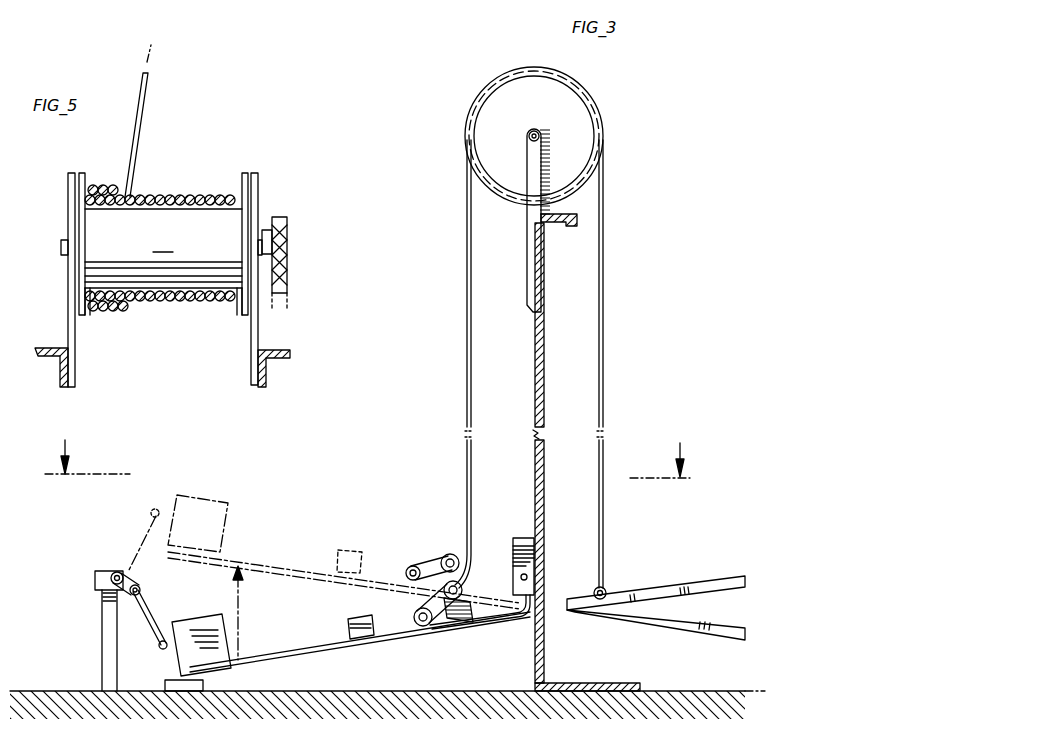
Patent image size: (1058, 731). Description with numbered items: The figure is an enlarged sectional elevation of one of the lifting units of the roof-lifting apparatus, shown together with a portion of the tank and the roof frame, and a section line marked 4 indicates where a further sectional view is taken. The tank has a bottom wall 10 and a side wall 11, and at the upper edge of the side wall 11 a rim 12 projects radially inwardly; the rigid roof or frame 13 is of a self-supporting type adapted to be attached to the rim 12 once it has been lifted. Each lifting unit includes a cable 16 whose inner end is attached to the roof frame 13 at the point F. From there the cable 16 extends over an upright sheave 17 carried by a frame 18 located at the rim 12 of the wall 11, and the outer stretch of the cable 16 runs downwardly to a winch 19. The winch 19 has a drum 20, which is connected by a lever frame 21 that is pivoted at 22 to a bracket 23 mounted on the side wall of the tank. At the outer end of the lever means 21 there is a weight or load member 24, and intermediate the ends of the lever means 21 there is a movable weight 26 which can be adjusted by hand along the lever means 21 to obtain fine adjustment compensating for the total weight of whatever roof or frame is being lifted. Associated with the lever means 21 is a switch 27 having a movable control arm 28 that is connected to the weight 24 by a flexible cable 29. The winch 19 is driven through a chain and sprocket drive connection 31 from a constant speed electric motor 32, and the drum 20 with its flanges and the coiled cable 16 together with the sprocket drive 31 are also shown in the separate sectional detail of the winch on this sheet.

In FIG. 3, the bottom wall 10 is at (622, 690).
In FIG. 3, the side wall 11 is at (545, 379).
In FIG. 3, the rim 12 is at (556, 223).
In FIG. 3, the roof frame 13 is at (714, 584).
In FIG. 3, the cable 16 is at (604, 521).
In FIG. 5, the cable 16 is at (140, 119).
In FIG. 3, the upright sheave 17 is at (542, 117).
In FIG. 3, the frame 18 is at (530, 208).
In FIG. 3, the winch 19 is at (452, 628).
In FIG. 5, the winch 19 is at (259, 186).
In FIG. 3, the drum 20 is at (476, 626).
In FIG. 5, the drum 20 is at (163, 262).
In FIG. 3, the lever frame 21 is at (281, 562).
In FIG. 5, the lever frame 21 is at (276, 350).
In FIG. 3, the pivot 22 is at (520, 577).
In FIG. 3, the bracket 23 is at (530, 538).
In FIG. 3, the load member 24 is at (194, 620).
In FIG. 3, the movable weight 26 is at (360, 615).
In FIG. 3, the switch 27 is at (97, 580).
In FIG. 3, the control arm 28 is at (141, 588).
In FIG. 3, the flexible cable 29 is at (145, 614).
In FIG. 3, the chain and sprocket drive connection 31 is at (410, 574).
In FIG. 5, the chain and sprocket drive connection 31 is at (289, 266).
In FIG. 3, the electric motor 32 is at (432, 610).
In FIG. 3, the cable attachment point F is at (606, 590).
In FIG. 3, the section line 4- 4 is at (367, 450).